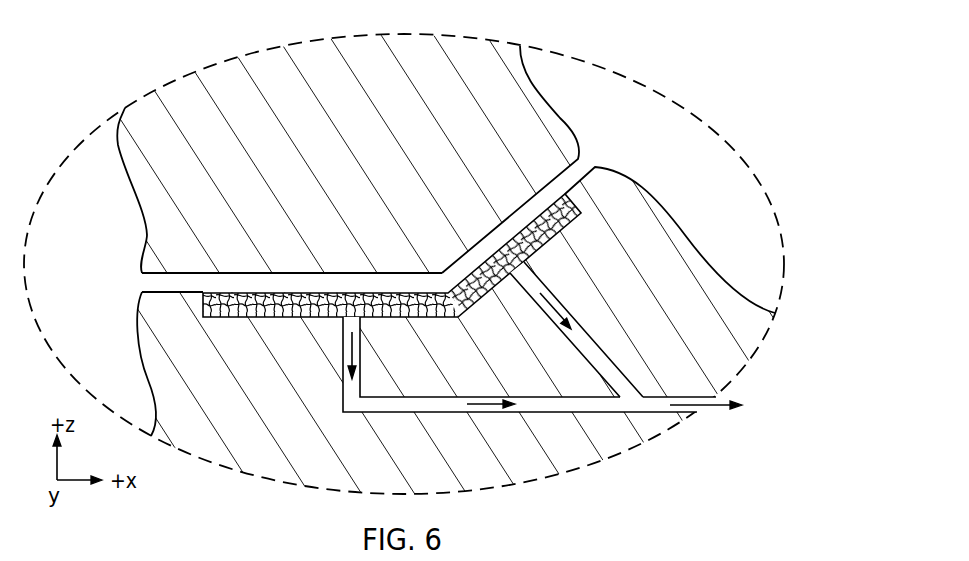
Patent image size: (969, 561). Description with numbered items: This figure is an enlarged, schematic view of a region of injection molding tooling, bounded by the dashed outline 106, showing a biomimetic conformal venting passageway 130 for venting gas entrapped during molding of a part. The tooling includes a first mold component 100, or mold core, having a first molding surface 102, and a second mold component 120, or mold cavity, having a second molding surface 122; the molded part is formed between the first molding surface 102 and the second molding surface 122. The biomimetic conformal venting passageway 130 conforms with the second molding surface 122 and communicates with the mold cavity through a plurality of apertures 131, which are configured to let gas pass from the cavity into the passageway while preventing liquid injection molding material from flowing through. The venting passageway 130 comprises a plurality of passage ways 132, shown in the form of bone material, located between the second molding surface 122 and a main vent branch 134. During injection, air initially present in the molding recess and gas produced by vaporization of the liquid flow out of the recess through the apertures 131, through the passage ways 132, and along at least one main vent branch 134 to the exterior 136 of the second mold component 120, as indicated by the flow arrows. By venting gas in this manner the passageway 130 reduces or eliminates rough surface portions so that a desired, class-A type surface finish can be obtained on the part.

The first mold component 100 is at (410, 101).
The first molding surface 102 is at (160, 275).
The detail region 106 is at (613, 70).
The second mold component 120 is at (253, 421).
The second molding surface 122 is at (150, 291).
The biomimetic conformal venting passageway 130 is at (573, 283).
The apertures 131 is at (323, 303).
The passage ways 132 is at (418, 317).
The main vent branch 134 is at (615, 363).
The exterior 136 is at (723, 405).